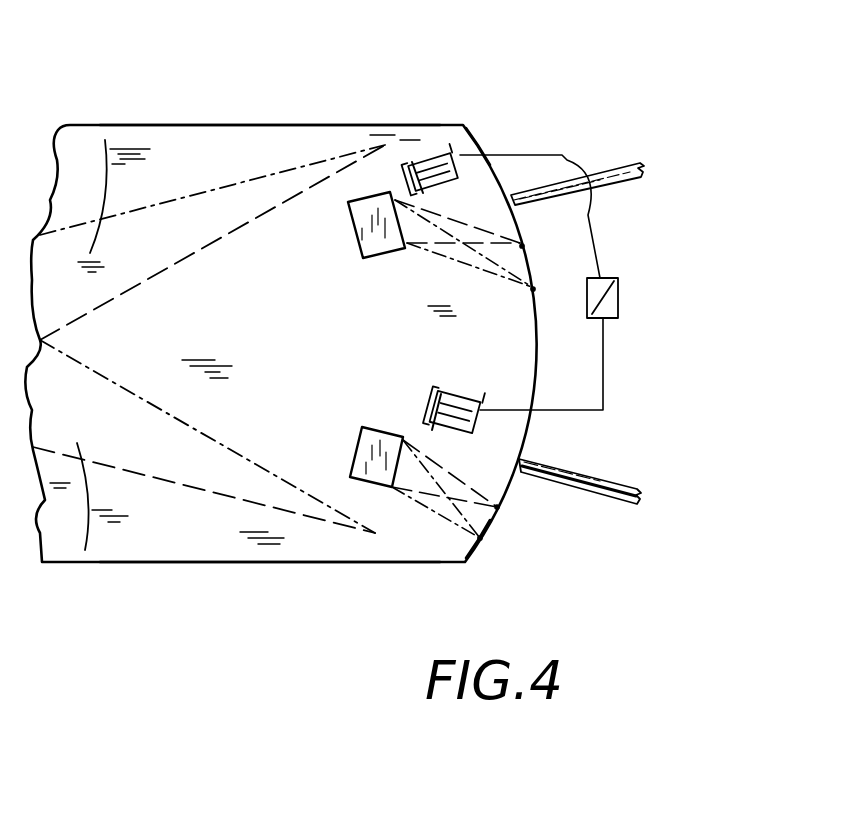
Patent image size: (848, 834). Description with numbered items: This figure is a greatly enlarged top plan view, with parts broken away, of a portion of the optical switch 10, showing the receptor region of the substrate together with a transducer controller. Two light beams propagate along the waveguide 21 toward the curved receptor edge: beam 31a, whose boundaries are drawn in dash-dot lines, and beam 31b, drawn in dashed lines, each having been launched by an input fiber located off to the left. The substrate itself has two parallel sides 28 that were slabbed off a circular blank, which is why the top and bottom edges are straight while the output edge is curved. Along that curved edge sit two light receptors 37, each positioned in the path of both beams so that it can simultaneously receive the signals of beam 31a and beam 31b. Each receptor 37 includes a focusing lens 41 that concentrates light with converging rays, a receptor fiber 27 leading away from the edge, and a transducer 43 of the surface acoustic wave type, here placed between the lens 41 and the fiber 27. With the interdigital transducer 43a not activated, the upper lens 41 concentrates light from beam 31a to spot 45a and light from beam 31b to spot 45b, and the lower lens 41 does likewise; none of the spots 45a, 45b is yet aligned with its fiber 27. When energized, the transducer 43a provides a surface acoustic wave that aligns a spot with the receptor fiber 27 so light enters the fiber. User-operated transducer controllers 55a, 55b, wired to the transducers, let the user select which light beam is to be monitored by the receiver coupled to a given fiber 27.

The switch 10 is at (247, 621).
The waveguide 21 is at (150, 540).
The receptor fiber 27 is at (612, 162).
The parallel side 28 is at (160, 125).
The light beam 31a is at (105, 140).
The light beam 31b is at (85, 550).
The light receptor 37 is at (424, 106).
The lens 41 is at (382, 195).
The transducer 43 is at (462, 146).
The interdigital transducer 43a is at (433, 157).
The spot 45a is at (532, 288).
The spot 45b is at (524, 252).
The transducer controller 55a is at (600, 287).
The transducer controller 55b is at (612, 297).